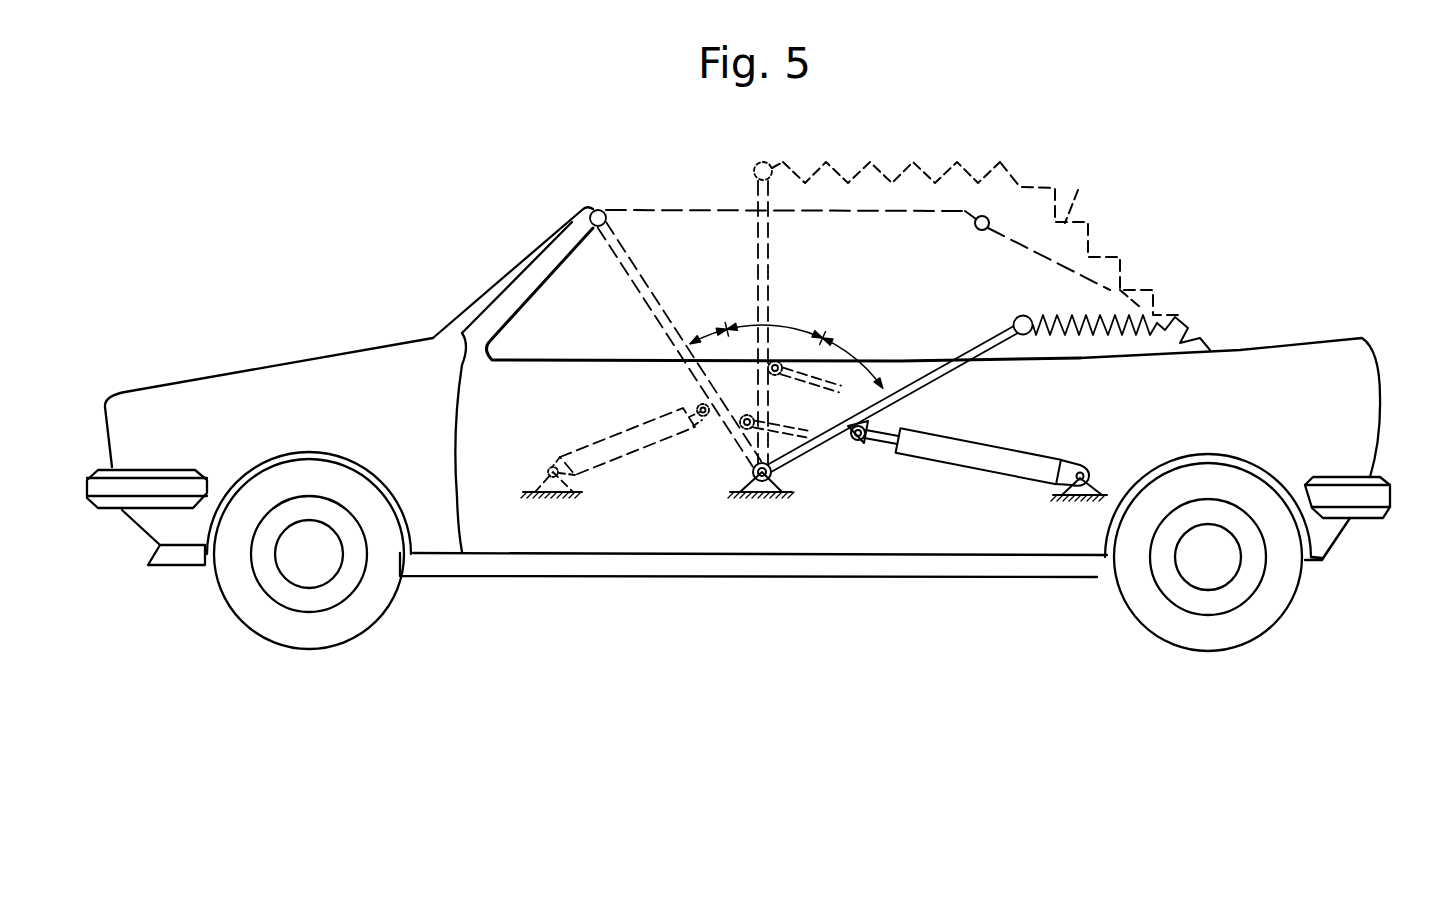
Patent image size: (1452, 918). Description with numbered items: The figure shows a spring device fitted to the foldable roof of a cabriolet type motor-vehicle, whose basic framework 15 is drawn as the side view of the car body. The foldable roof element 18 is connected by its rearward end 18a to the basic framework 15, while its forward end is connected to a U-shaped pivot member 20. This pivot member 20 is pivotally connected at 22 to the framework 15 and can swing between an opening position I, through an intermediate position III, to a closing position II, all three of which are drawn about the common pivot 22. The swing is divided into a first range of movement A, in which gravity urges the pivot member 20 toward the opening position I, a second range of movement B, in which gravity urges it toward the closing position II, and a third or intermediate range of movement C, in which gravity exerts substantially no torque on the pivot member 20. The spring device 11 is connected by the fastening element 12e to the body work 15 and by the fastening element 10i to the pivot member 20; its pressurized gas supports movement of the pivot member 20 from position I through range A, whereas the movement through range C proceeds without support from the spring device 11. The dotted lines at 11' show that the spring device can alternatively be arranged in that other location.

The basic framework 15 is at (1360, 422).
The foldable roof element 18 is at (1057, 197).
The rearward end 18a is at (1210, 350).
The U-shaped pivot member 20 is at (868, 311).
The pivot connection 22 is at (777, 483).
The fastening element 10i is at (853, 447).
The spring device 11 is at (962, 478).
The spring device in alternative arrangement 11' is at (611, 459).
The fastening element 12e is at (1070, 467).
The opening position I is at (955, 355).
The closing position II is at (637, 297).
The intermediate position III is at (770, 283).
The first range of movement A is at (860, 330).
The second range of movement B is at (698, 314).
The third or intermediate range of movement C is at (793, 305).